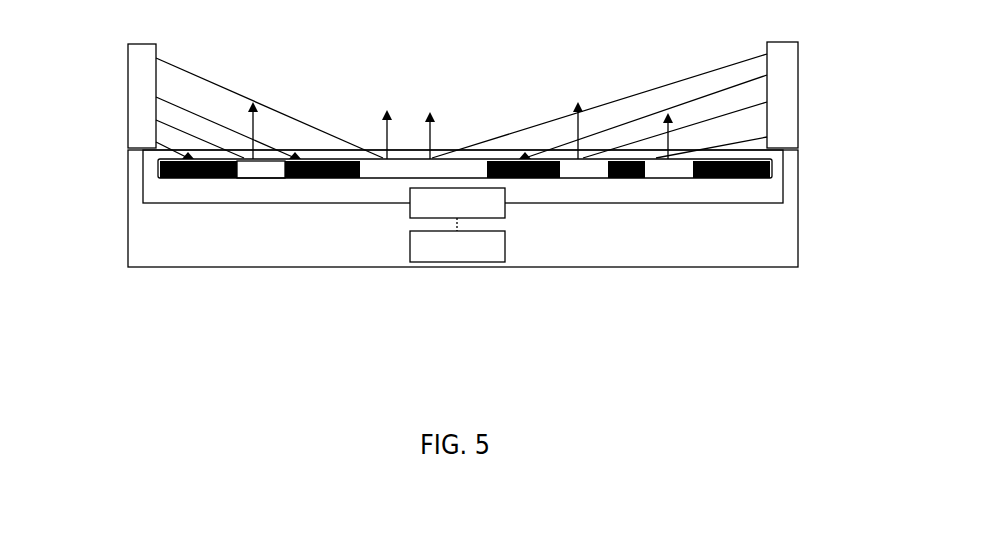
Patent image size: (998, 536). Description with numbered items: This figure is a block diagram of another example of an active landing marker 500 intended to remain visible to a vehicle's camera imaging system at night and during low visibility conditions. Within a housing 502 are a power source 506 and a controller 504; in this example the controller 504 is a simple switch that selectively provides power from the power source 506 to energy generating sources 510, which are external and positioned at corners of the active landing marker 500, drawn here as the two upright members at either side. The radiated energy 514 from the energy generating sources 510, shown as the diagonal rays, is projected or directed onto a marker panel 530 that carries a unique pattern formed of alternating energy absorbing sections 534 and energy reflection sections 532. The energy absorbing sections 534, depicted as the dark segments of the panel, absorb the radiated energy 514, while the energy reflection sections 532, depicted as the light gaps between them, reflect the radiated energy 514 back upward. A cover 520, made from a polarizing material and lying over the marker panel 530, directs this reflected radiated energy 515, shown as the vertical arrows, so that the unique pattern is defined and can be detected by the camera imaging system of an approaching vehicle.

The active landing marker 500 is at (880, 104).
The housing 502 is at (128, 248).
The controller 504 is at (457, 203).
The power source 506 is at (457, 240).
The energy generating sources 510 is at (137, 110).
The radiated energy 514 is at (200, 75).
The reflected radiated energy 515 is at (256, 128).
The cover 520 is at (155, 147).
The marker panel 530 is at (158, 165).
The energy reflection sections 532 is at (258, 162).
The energy absorbing sections 534 is at (312, 180).